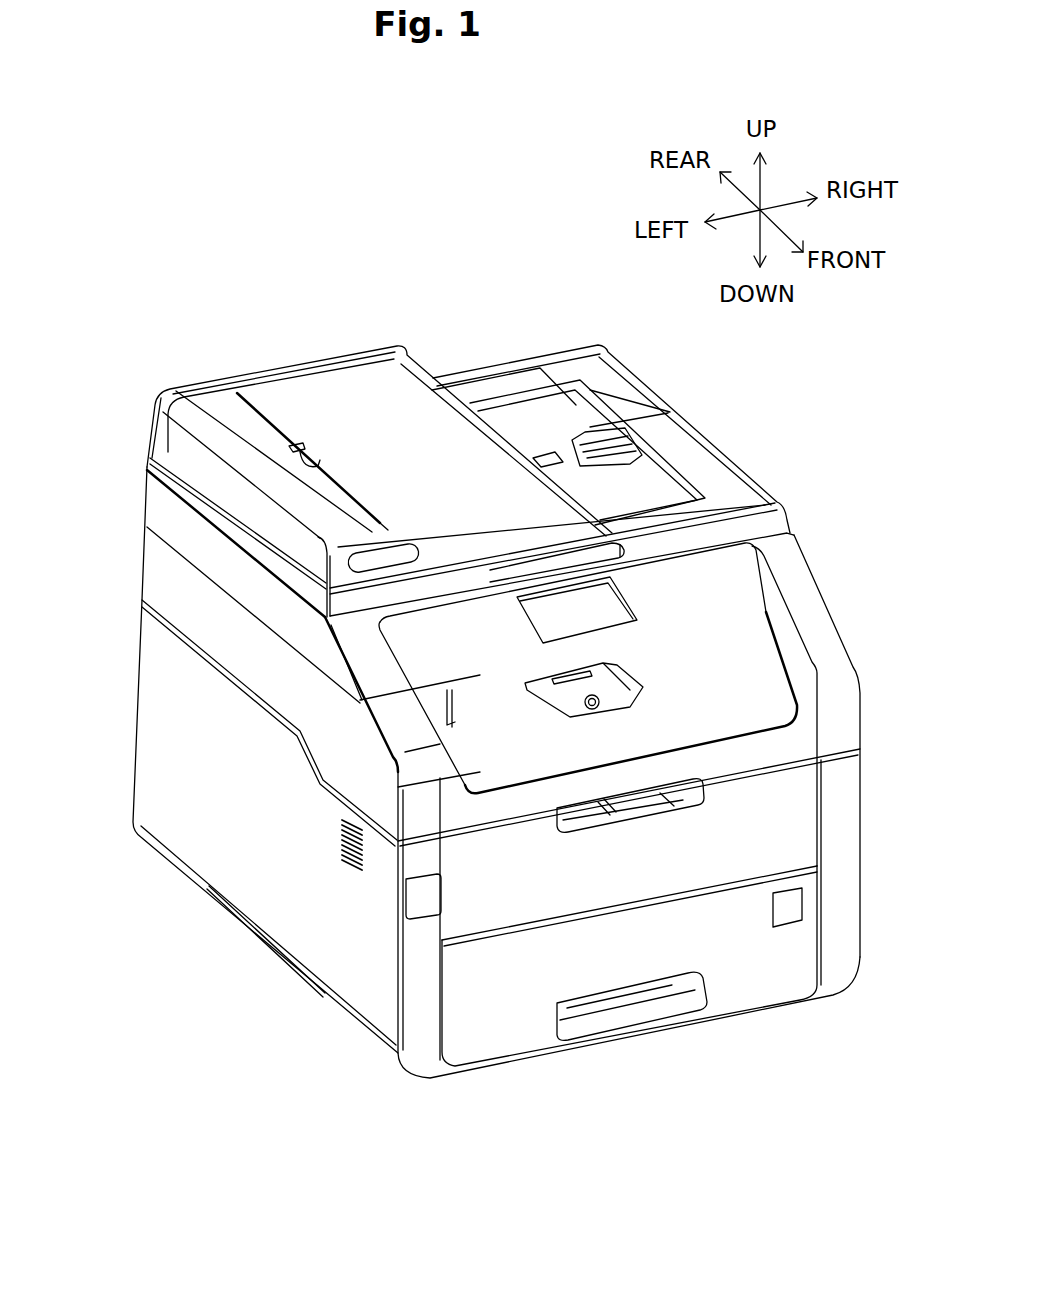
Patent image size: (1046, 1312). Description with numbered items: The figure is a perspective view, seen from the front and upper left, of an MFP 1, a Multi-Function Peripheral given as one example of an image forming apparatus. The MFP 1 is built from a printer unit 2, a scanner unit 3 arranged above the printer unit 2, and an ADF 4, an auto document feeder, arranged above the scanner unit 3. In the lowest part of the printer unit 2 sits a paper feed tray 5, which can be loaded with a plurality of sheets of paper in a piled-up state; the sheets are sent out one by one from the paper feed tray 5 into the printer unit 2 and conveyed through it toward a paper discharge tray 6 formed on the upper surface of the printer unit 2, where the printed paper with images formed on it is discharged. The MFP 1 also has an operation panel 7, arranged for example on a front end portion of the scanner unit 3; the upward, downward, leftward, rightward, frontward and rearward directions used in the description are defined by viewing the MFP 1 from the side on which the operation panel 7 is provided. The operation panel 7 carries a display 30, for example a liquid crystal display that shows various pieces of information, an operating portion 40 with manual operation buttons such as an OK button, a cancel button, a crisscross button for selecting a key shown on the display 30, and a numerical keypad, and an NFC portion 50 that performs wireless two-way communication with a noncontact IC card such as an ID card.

The MFP 1 is at (514, 1111).
The printer unit 2 is at (265, 904).
The scanner unit 3 is at (157, 505).
The ADF 4 is at (337, 363).
The paper feed tray 5 is at (763, 987).
The paper discharge tray 6 is at (745, 720).
The operation panel 7 is at (762, 548).
The display 30 is at (570, 615).
The operating portion 40 is at (677, 613).
The NFC portion 50 is at (478, 650).